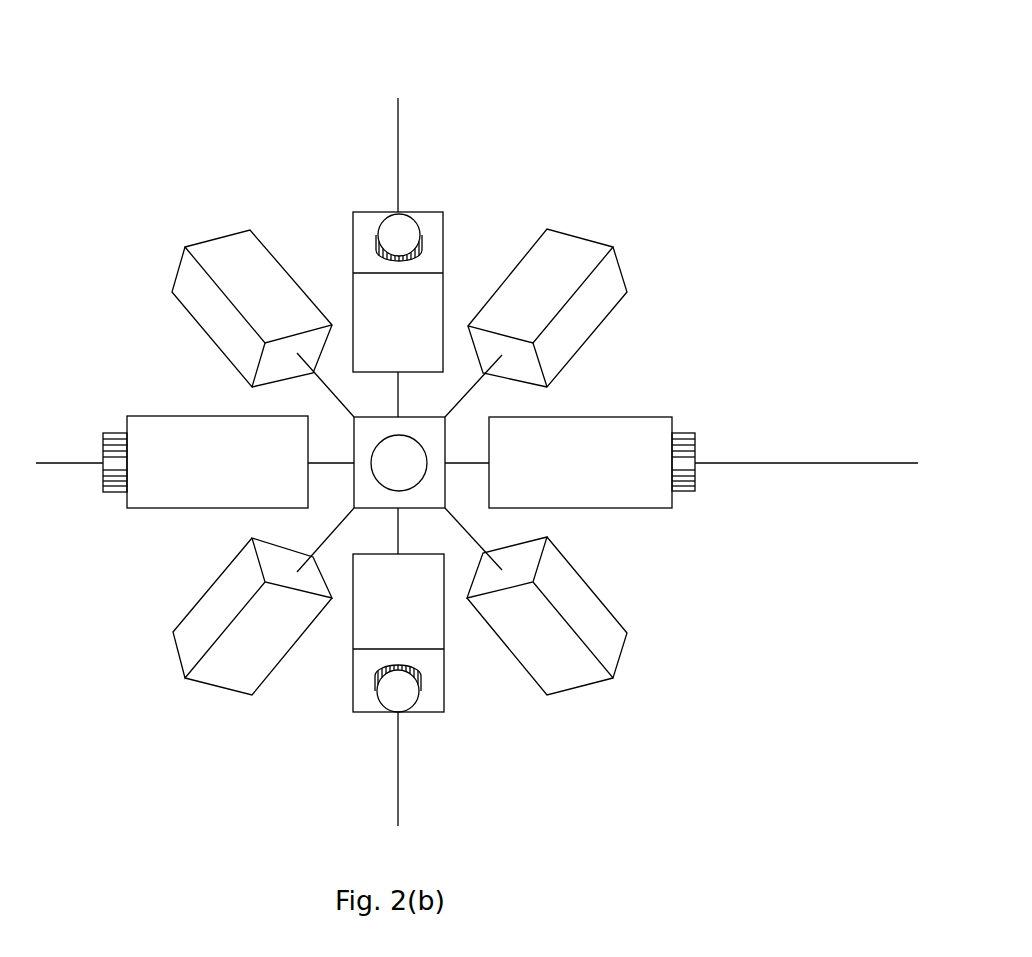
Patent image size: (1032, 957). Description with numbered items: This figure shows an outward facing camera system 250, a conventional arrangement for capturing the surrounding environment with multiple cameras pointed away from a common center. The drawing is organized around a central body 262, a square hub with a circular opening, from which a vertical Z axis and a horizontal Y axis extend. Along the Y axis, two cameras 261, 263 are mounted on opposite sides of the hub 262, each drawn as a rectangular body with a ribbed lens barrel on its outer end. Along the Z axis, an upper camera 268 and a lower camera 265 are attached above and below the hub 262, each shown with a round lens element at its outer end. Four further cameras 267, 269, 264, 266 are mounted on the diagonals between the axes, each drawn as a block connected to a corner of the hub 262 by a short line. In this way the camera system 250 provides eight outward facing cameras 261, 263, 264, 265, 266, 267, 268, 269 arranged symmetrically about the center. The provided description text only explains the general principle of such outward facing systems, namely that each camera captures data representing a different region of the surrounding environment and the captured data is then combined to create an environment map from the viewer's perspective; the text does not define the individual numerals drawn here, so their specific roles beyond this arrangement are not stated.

The coil assembly 250 is at (471, 114).
The Y-axis coil 261 is at (266, 477).
The central hub 262 is at (445, 433).
The Y-axis coil 263 is at (584, 477).
The diagonal coil 264 is at (289, 647).
The Z-axis coil 265 is at (424, 613).
The diagonal coil 266 is at (561, 645).
The diagonal coil 267 is at (288, 306).
The Z-axis coil 268 is at (424, 338).
The diagonal coil 269 is at (572, 293).